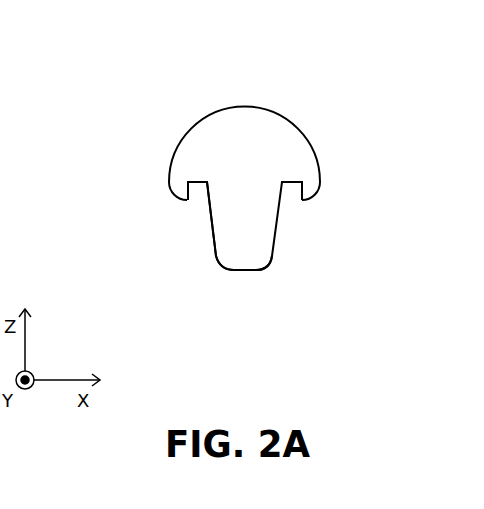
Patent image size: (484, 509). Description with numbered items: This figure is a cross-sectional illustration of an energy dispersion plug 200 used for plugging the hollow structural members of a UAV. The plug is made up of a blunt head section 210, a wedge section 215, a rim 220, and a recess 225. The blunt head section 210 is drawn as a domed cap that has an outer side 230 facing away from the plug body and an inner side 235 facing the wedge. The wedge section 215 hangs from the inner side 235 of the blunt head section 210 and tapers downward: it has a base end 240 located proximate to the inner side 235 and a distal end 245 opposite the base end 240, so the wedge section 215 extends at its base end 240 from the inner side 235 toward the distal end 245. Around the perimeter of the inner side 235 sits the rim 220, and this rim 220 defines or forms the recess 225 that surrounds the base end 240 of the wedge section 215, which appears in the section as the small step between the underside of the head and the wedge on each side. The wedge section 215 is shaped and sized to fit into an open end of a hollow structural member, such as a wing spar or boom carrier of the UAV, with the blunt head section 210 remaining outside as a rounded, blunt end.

The energy dispersion plug 200 is at (229, 167).
The blunt head section 210 is at (263, 154).
The wedge section 215 is at (263, 234).
The rim 220 is at (271, 226).
The recess 225 is at (197, 215).
The outer side 230 is at (281, 135).
The inner side 235 is at (296, 177).
The base end 240 is at (228, 175).
The distal end 245 is at (245, 270).